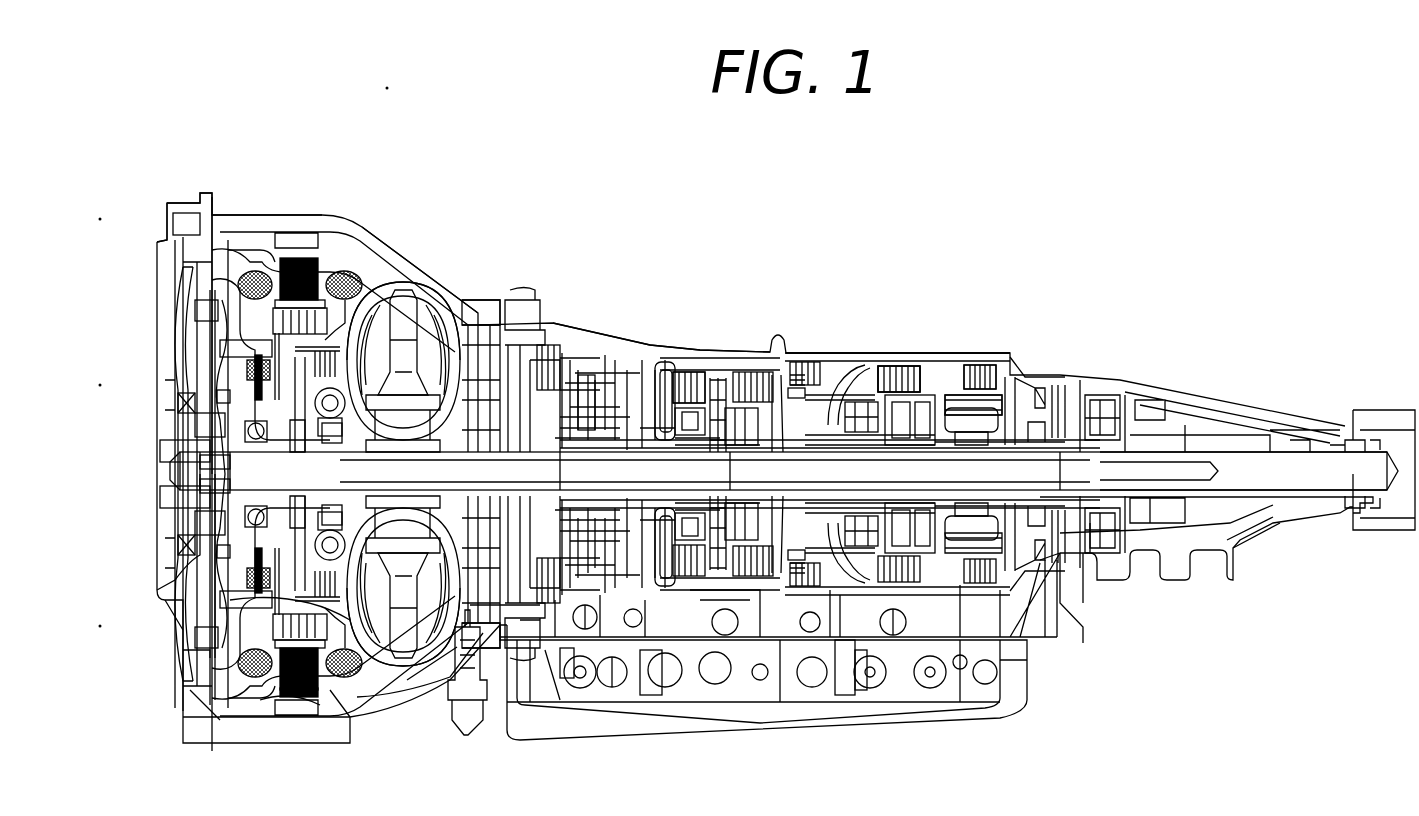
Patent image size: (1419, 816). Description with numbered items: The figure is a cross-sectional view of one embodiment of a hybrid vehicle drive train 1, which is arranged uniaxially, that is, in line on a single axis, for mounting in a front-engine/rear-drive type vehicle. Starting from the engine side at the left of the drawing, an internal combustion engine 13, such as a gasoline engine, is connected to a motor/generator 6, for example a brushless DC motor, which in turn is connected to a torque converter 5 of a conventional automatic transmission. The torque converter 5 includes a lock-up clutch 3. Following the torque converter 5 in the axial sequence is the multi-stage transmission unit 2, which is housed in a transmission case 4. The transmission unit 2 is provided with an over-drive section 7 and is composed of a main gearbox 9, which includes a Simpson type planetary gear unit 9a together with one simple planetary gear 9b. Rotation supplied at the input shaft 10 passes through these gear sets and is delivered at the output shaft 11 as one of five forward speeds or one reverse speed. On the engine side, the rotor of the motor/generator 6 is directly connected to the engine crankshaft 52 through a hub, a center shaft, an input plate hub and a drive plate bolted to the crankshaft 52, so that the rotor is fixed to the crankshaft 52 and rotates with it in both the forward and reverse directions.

The hybrid vehicle drive train 1 is at (797, 222).
The multi-stage transmission unit 2 is at (777, 330).
The lock-up clutch 3 is at (342, 316).
The transmission case 4 is at (689, 350).
The torque converter 5 is at (434, 266).
The motor/generator 6 is at (272, 207).
The over-drive section 7 is at (596, 378).
The main gearbox 9 is at (973, 278).
The Simpson type planetary gear unit 9a is at (874, 366).
The simple planetary gear 9b is at (952, 395).
The input shaft 10 is at (478, 470).
The output shaft 11 is at (1170, 460).
The internal combustion engine 13 is at (183, 192).
The engine crankshaft 52 is at (170, 466).